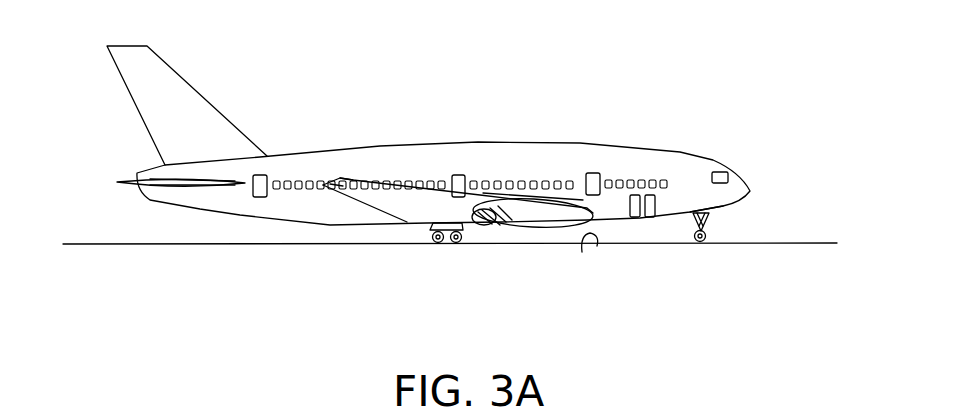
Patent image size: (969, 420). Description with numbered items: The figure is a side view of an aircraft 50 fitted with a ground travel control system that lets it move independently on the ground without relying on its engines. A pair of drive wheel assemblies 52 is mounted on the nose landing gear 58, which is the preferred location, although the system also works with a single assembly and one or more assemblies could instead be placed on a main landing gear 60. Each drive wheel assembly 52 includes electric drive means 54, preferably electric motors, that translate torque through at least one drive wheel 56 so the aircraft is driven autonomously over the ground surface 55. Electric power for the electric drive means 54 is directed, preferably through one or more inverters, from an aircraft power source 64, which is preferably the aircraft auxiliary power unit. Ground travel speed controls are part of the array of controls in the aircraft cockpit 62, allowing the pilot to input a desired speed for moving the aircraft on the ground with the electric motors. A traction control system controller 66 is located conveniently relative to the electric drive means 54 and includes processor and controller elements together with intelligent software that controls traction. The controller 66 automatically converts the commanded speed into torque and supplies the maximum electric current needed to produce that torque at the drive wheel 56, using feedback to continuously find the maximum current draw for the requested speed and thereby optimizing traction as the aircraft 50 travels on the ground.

The aircraft 50 is at (478, 127).
The drive wheel assembly 52 is at (707, 250).
The electric drive means 54 is at (715, 243).
The ground surface 55 is at (582, 252).
The drive wheel 56 is at (690, 247).
The nose landing gear 58 is at (728, 222).
The main landing gear 60 is at (450, 245).
The aircraft cockpit 62 is at (730, 172).
The aircraft power source 64 is at (633, 183).
The traction control system controller 66 is at (647, 190).